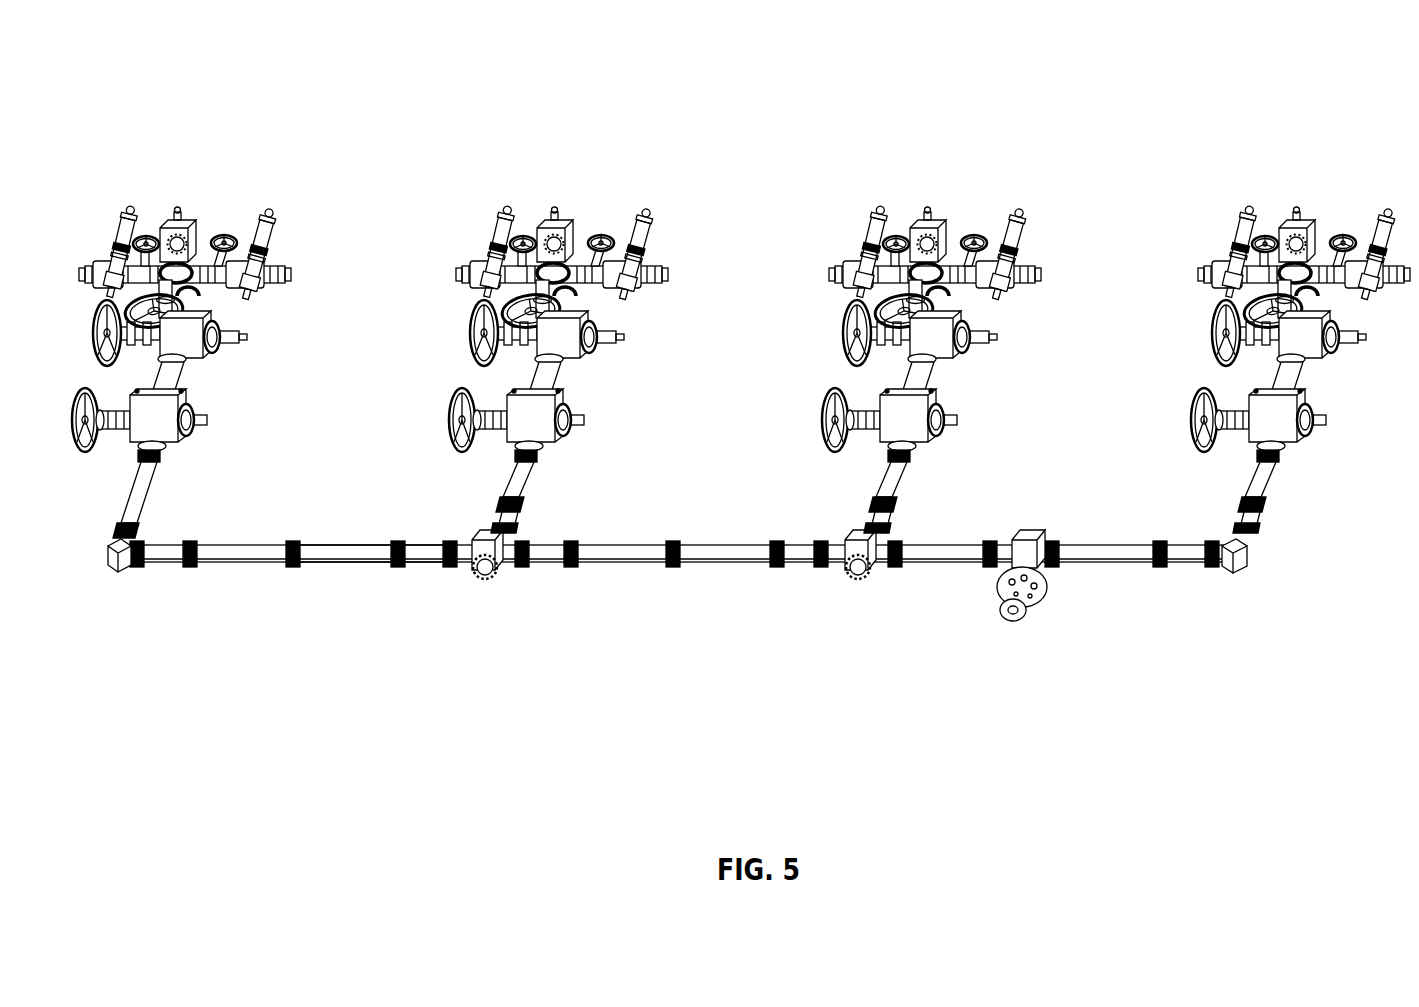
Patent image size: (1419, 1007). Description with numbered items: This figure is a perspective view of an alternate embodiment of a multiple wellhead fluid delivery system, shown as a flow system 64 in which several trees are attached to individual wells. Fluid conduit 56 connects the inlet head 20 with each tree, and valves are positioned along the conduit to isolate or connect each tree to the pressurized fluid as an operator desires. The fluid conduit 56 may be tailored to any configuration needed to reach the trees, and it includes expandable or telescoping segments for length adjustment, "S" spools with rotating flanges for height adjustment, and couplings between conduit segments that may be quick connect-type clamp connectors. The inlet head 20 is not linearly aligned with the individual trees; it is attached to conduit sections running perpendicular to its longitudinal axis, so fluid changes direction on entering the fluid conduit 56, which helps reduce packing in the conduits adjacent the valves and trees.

The inlet head 20 is at (1047, 578).
The fluid conduit 56 is at (860, 481).
The flow system 64 is at (133, 50).